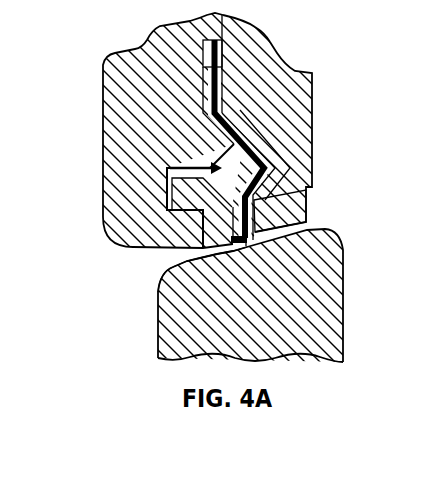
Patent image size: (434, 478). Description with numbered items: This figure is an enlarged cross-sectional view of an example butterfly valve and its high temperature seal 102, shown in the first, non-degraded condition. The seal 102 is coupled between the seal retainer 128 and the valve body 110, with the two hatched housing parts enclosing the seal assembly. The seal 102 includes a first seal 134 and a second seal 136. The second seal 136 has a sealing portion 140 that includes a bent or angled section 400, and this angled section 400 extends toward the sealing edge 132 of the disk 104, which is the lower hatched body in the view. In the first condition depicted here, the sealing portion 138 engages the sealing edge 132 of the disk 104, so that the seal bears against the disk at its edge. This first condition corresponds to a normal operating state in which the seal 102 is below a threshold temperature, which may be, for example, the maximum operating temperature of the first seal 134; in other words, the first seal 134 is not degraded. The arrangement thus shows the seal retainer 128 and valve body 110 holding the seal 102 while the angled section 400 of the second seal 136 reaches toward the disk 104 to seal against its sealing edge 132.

The seal retainer 128 is at (126, 123).
The valve body 110 is at (272, 100).
The seal 102 is at (167, 168).
The angled section 400 is at (230, 246).
The second seal 136 is at (258, 148).
The first seal 134 is at (278, 203).
The sealing edge 132 is at (233, 240).
The sealing portion 138 is at (232, 246).
The disk 104 is at (308, 280).
The sealing portion 140 is at (247, 247).